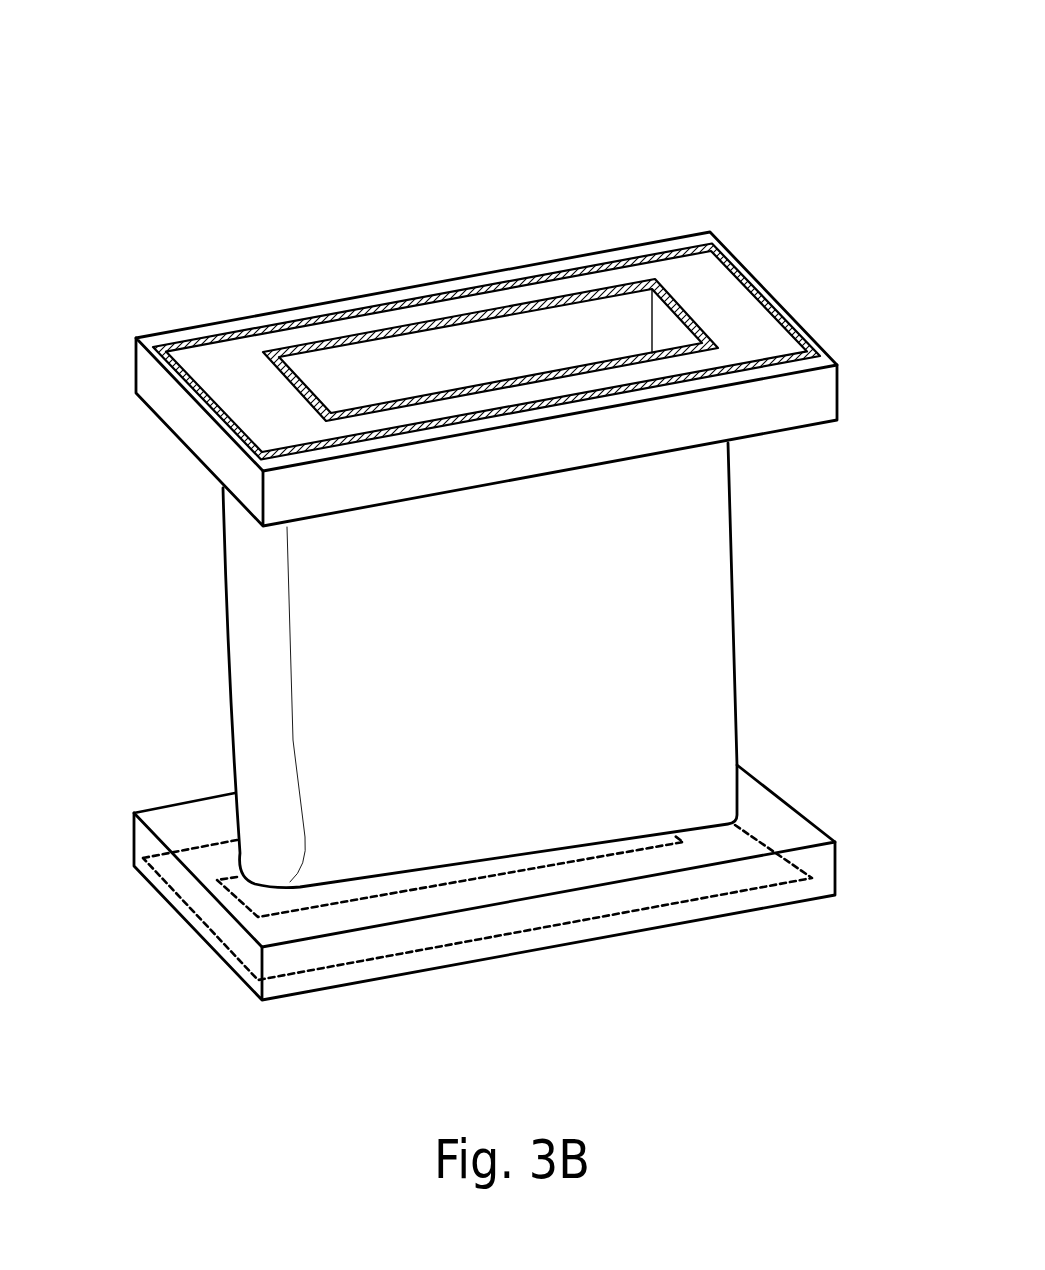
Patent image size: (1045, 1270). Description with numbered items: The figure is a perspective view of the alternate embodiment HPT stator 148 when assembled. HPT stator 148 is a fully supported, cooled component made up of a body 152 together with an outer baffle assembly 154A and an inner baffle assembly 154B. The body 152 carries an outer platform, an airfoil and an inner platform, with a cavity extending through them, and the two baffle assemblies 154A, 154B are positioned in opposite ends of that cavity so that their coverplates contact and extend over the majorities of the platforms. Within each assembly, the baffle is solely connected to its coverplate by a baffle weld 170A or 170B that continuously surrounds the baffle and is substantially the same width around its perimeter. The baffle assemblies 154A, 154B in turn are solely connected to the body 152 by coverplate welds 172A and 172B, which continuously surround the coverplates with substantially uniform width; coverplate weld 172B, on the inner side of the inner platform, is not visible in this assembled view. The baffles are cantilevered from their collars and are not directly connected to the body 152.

The HPT stator 148 is at (656, 126).
The outer baffle assembly 154A is at (339, 296).
The baffle weld 170A is at (601, 286).
The coverplate weld 172A is at (796, 327).
The body 152 is at (179, 449).
The inner baffle assembly 154B is at (484, 922).
The coverplate weld 172B is at (697, 898).
The baffle weld 170B is at (527, 872).